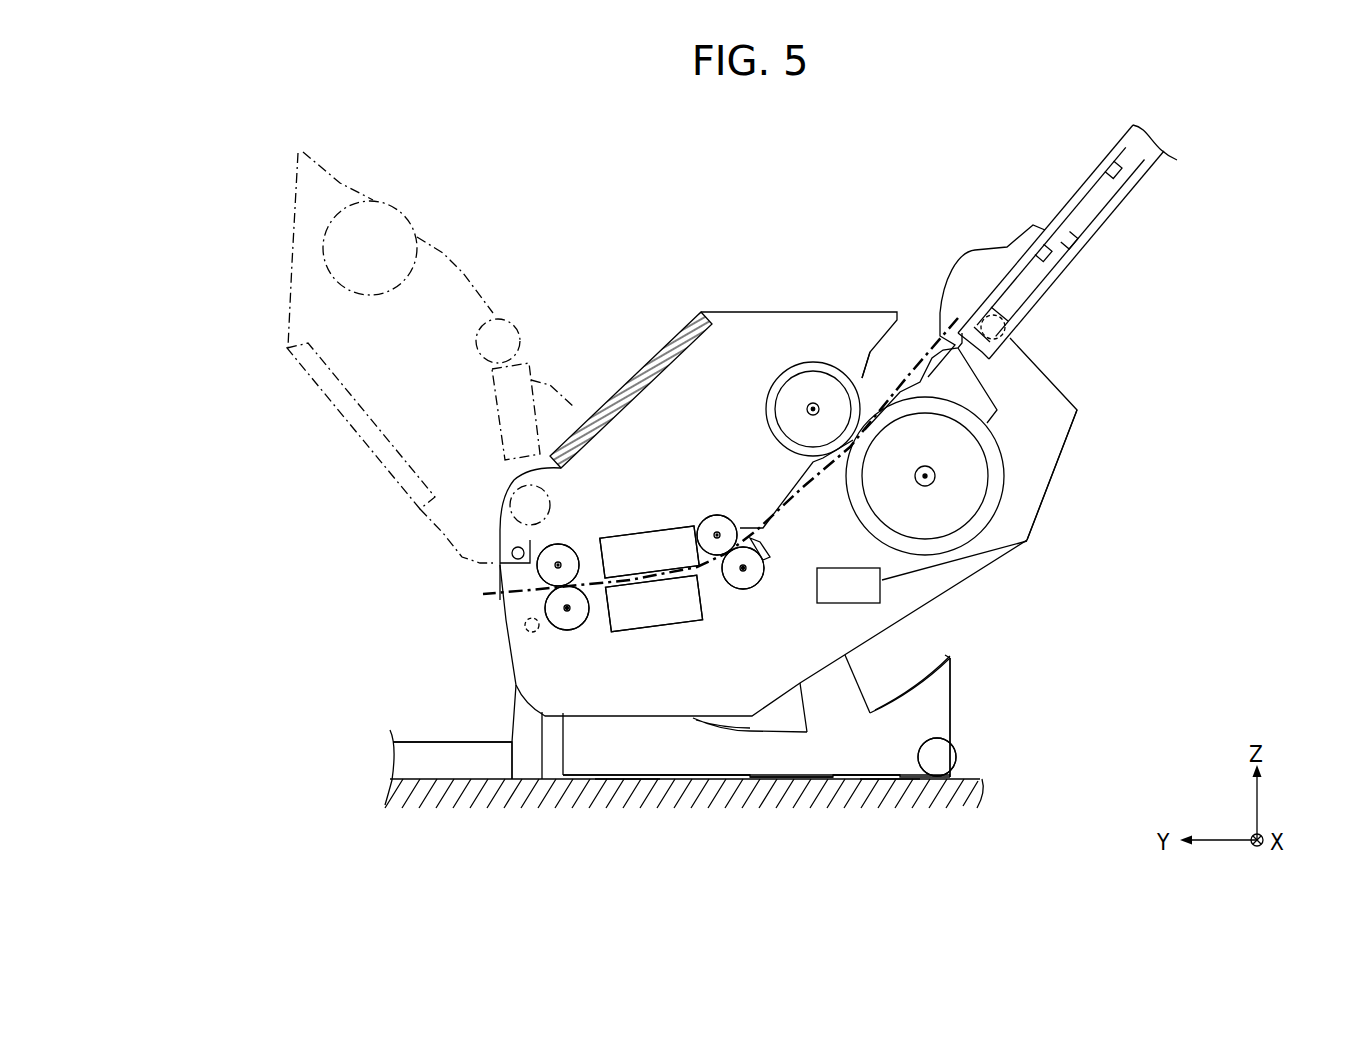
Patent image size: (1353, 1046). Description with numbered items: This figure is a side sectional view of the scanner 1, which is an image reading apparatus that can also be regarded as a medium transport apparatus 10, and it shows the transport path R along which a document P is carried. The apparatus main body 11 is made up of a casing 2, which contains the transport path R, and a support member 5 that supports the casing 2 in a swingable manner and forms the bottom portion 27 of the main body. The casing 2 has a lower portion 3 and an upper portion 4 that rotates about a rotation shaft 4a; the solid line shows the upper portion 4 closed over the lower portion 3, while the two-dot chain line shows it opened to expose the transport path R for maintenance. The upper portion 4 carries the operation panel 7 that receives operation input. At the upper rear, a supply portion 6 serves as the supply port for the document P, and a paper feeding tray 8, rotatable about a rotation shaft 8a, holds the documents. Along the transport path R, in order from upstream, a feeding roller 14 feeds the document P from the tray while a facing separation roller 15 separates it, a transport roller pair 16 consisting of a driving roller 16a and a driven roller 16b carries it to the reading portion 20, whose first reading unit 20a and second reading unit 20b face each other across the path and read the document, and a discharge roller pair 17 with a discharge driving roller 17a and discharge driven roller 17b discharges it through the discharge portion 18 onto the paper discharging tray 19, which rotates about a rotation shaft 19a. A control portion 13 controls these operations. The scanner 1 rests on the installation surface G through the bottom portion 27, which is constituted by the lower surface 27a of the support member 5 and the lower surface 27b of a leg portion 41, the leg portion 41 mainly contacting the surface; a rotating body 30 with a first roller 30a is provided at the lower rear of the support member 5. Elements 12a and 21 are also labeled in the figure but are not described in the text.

The scanner 1 is at (642, 221).
The medium transport apparatus 10 is at (1058, 335).
The casing 2 is at (1008, 585).
The lower portion 3 is at (1073, 432).
The upper portion 4 is at (722, 312).
The rotation shaft 4a is at (512, 553).
The support member 5 is at (950, 703).
The supply portion 6 is at (915, 333).
The operation panel 7 is at (607, 410).
The paper feeding tray 8 is at (1078, 190).
The rotation shaft 8a is at (1000, 330).
The apparatus main body 11 is at (1057, 648).
The projection 12a is at (975, 250).
The control portion 13 is at (1008, 553).
The feeding roller 14 is at (983, 487).
The separation roller 15 is at (812, 363).
The transport roller pair 16 is at (693, 508).
The driving roller 16a is at (758, 590).
The driven roller 16b is at (715, 513).
The discharge roller pair 17 is at (588, 626).
The discharge driving roller 17a is at (568, 630).
The discharge driven roller 17b is at (562, 547).
The discharge portion 18 is at (490, 583).
The paper discharging tray 19 is at (452, 760).
The rotation shaft 19a is at (525, 625).
The reading portion 20 is at (641, 515).
The first reading unit 20a is at (657, 527).
The second reading unit 20b is at (670, 632).
The tray support 21 is at (442, 742).
The bottom portion 27 is at (848, 850).
The lower surface 27a is at (750, 785).
The lower surface 27b is at (655, 785).
The rotating body 30 is at (937, 757).
The first roller 30a is at (957, 752).
The leg portion 41 is at (893, 785).
The document P is at (953, 318).
The transport path R is at (750, 522).
The installation surface G is at (982, 779).